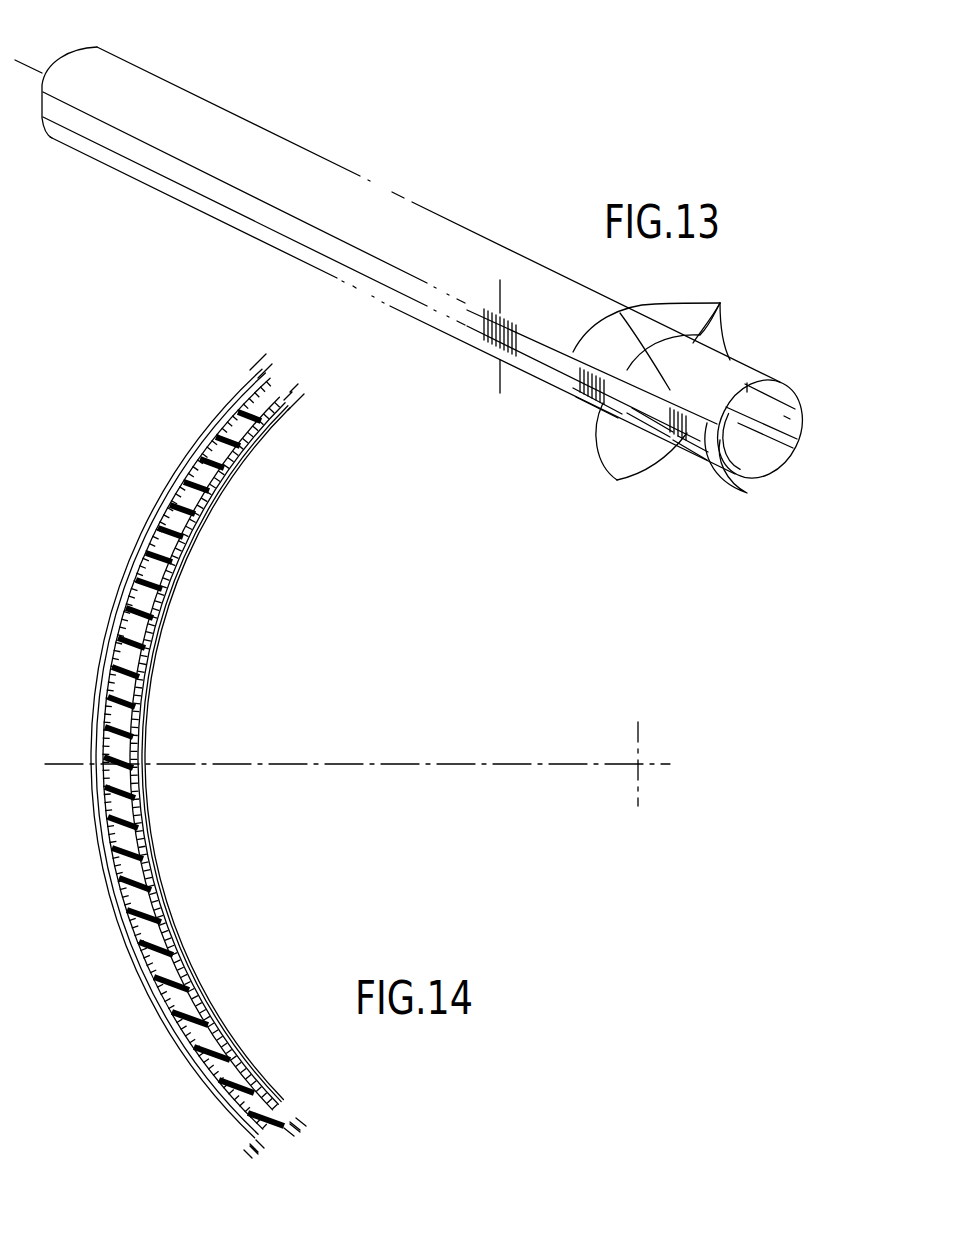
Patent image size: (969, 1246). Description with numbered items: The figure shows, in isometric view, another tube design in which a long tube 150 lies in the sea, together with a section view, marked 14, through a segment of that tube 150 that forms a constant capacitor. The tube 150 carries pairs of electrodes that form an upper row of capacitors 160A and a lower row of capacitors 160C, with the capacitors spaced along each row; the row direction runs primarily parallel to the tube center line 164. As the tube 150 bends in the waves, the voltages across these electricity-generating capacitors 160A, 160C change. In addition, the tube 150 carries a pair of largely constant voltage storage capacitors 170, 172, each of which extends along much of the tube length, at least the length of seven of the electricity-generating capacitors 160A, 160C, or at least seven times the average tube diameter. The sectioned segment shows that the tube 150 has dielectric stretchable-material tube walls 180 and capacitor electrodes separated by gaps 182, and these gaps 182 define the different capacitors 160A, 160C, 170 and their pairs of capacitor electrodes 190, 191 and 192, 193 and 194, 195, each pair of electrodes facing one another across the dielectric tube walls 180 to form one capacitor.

In FIG. 13, the tube 150 is at (432, 114).
In FIG. 14, the tube 150 is at (178, 418).
In FIG. 13, the tube center line 164 is at (28, 63).
In FIG. 13, the section line 14- 14 is at (500, 283).
In FIG. 13, the constant capacitor 170 is at (566, 385).
In FIG. 14, the constant capacitor 170 is at (92, 671).
In FIG. 13, the constant capacitor 172 is at (800, 413).
In FIG. 13, the upper row of capacitors 160A is at (694, 340).
In FIG. 14, the upper row of capacitors 160A is at (163, 486).
In FIG. 13, the lower row of capacitors 160C is at (617, 480).
In FIG. 14, the lower row of capacitors 160C is at (167, 1050).
In FIG. 13, the gaps 182 is at (744, 492).
In FIG. 14, the gaps 182 is at (133, 577).
In FIG. 14, the dielectric SM tube walls 180 is at (153, 643).
In FIG. 14, the capacitor electrode 190 is at (157, 522).
In FIG. 14, the capacitor electrode 191 is at (187, 534).
In FIG. 14, the capacitor electrode 192 is at (97, 733).
In FIG. 14, the capacitor electrode 193 is at (133, 740).
In FIG. 14, the capacitor electrode 194 is at (213, 1097).
In FIG. 14, the capacitor electrode 195 is at (240, 1068).